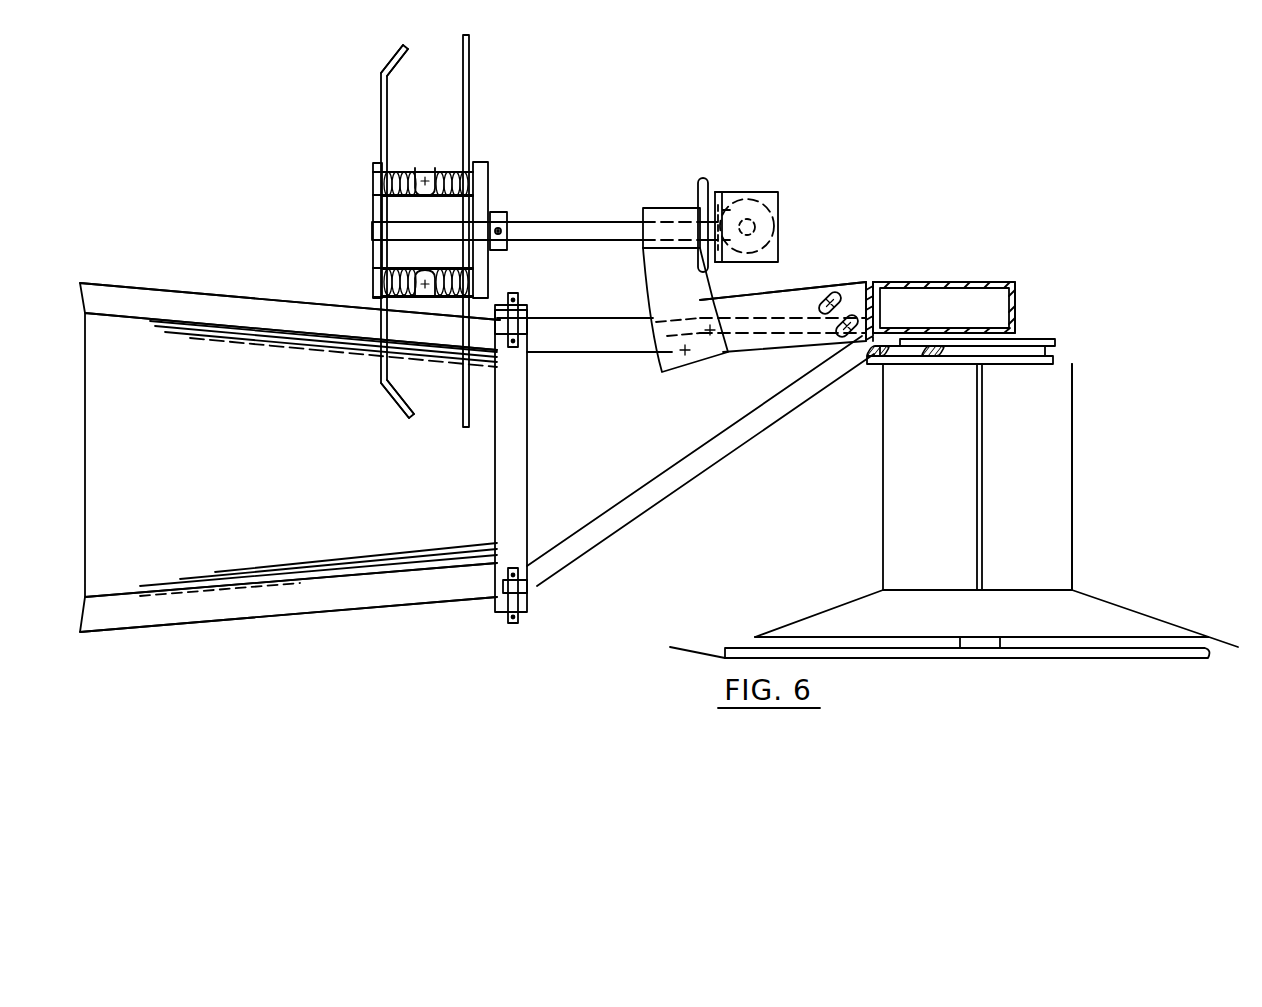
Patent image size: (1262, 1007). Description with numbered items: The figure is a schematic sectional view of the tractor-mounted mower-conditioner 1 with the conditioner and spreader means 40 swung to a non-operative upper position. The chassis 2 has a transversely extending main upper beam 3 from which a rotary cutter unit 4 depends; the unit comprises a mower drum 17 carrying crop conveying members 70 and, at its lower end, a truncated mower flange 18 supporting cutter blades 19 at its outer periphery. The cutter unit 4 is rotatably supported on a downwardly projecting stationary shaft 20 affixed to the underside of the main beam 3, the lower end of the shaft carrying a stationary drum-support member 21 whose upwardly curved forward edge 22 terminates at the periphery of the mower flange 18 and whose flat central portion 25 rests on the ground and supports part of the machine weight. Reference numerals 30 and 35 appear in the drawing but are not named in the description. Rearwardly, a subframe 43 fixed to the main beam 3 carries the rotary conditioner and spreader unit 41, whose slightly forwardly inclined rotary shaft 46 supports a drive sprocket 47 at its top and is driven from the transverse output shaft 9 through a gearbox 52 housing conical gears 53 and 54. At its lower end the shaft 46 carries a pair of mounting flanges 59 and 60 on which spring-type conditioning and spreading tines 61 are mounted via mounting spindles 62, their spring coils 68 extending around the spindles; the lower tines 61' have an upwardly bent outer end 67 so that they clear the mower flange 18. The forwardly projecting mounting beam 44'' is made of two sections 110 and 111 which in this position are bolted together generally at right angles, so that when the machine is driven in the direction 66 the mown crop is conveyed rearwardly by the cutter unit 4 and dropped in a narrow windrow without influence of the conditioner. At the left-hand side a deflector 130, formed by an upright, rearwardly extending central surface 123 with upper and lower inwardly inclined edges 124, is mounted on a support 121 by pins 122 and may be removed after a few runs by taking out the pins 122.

The mower-conditioner 1 is at (1048, 268).
The chassis 2 is at (1022, 311).
The main upper beam 3 is at (978, 282).
The rotary cutter unit 4 is at (1078, 458).
The transverse output shaft 9 is at (762, 221).
The mower drum 17 is at (1076, 420).
The mower flange 18 is at (1112, 604).
The cutter blades 19 is at (845, 604).
The stationary shaft 20 is at (1046, 338).
The stationary drum-support member 21 is at (1122, 659).
The upwardly curved forward edge 22 is at (1210, 656).
The flat central portion 25 is at (1058, 662).
The bolts 30 is at (870, 358).
The lower plate 35 is at (1052, 352).
The conditioner and spreader means 40 is at (575, 138).
The rotary conditioner and spreader unit 41 is at (532, 70).
The subframe 43 is at (830, 283).
The forwardly projecting mounting beam 44'' is at (783, 262).
The rotary shaft 46 is at (548, 226).
The drive sprocket 47 is at (700, 186).
The gearbox 52 is at (760, 192).
The conical gear 53 is at (780, 200).
The conical gear 54 is at (720, 198).
The mounting flange 59 is at (488, 170).
The mounting flange 60 is at (372, 211).
The conditioning and spreading tine 61 is at (439, 231).
The lower tine 61' is at (370, 231).
The mounting spindle 62 is at (427, 166).
The direction of movement 66 is at (1108, 468).
The upwardly bent outer end 67 is at (385, 60).
The spring coils 68 is at (400, 200).
The crop conveying members 70 is at (975, 465).
The mounting beam section 110 is at (786, 348).
The mounting beam section 111 is at (646, 280).
The support 121 is at (604, 327).
The pins 122 is at (519, 297).
The central surface 123 is at (290, 466).
The inwardly inclined edges 124 is at (232, 305).
The deflector 130 is at (312, 612).